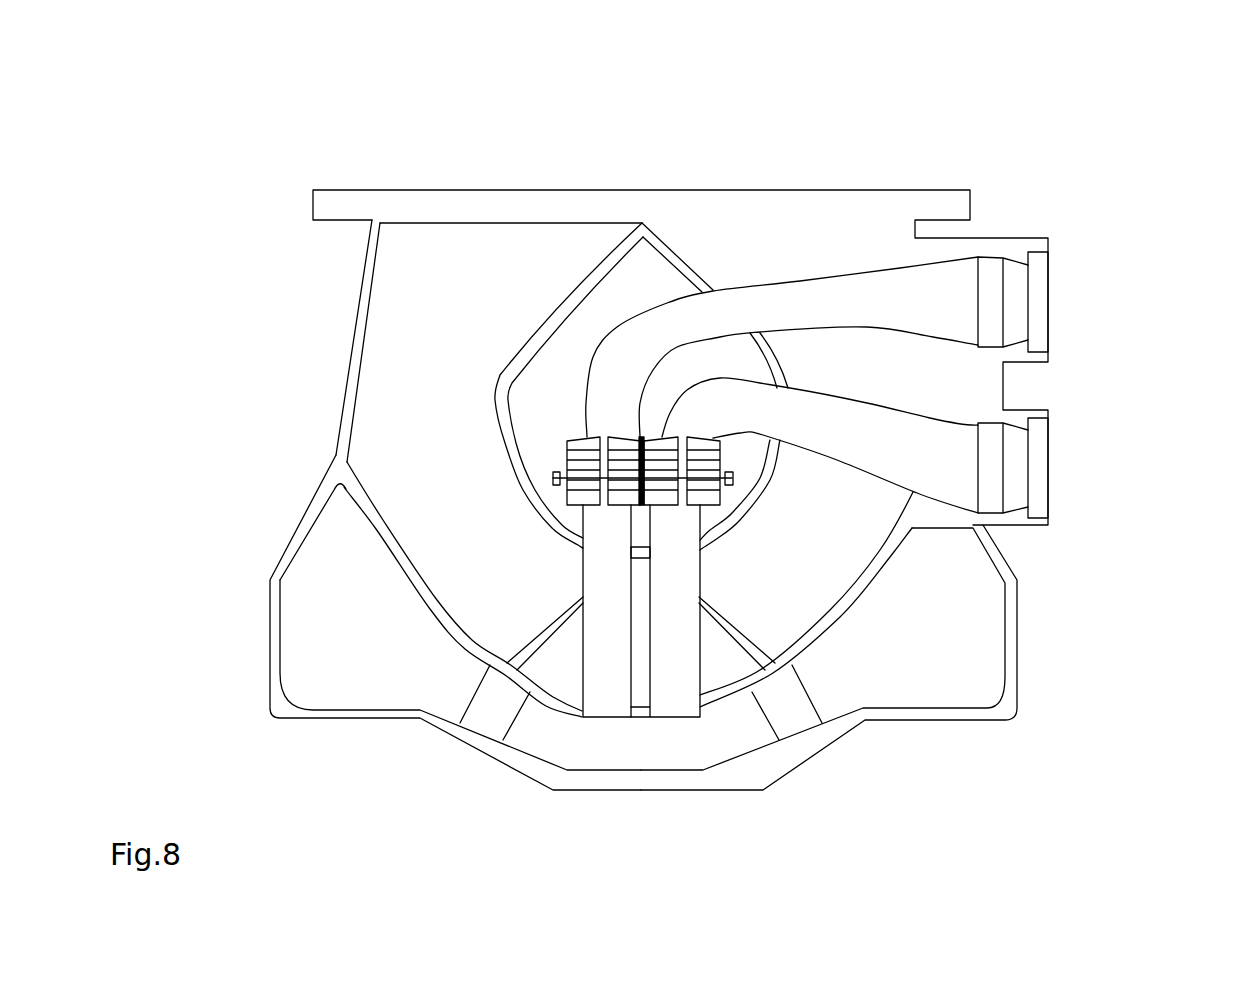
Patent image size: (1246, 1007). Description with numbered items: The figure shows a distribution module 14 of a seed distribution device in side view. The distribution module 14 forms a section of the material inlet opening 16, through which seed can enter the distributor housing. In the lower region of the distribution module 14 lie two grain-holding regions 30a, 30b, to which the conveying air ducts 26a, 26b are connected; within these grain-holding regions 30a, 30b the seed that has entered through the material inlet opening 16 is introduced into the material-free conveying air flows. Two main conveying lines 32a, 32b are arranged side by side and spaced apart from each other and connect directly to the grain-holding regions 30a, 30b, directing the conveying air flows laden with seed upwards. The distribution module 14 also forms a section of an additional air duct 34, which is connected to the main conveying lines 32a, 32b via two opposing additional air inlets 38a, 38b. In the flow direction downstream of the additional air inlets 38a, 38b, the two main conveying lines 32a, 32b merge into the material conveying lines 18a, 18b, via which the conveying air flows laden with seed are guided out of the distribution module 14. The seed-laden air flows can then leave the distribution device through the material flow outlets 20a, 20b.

The distribution module 14 is at (357, 313).
The material inlet opening 16 is at (627, 165).
The material conveying line 18a is at (938, 427).
The material conveying line 18b is at (943, 285).
The material flow outlet 20a is at (1058, 469).
The material flow outlet 20b is at (1058, 298).
The conveying air duct 26a is at (372, 690).
The conveying air duct 26b is at (947, 693).
The grain-holding region 30a is at (607, 700).
The grain-holding region 30b is at (672, 700).
The main conveying line 32a is at (597, 692).
The main conveying line 32b is at (672, 683).
The additional air duct 34 is at (567, 333).
The additional air inlet 38a is at (535, 458).
The additional air inlet 38b is at (736, 458).